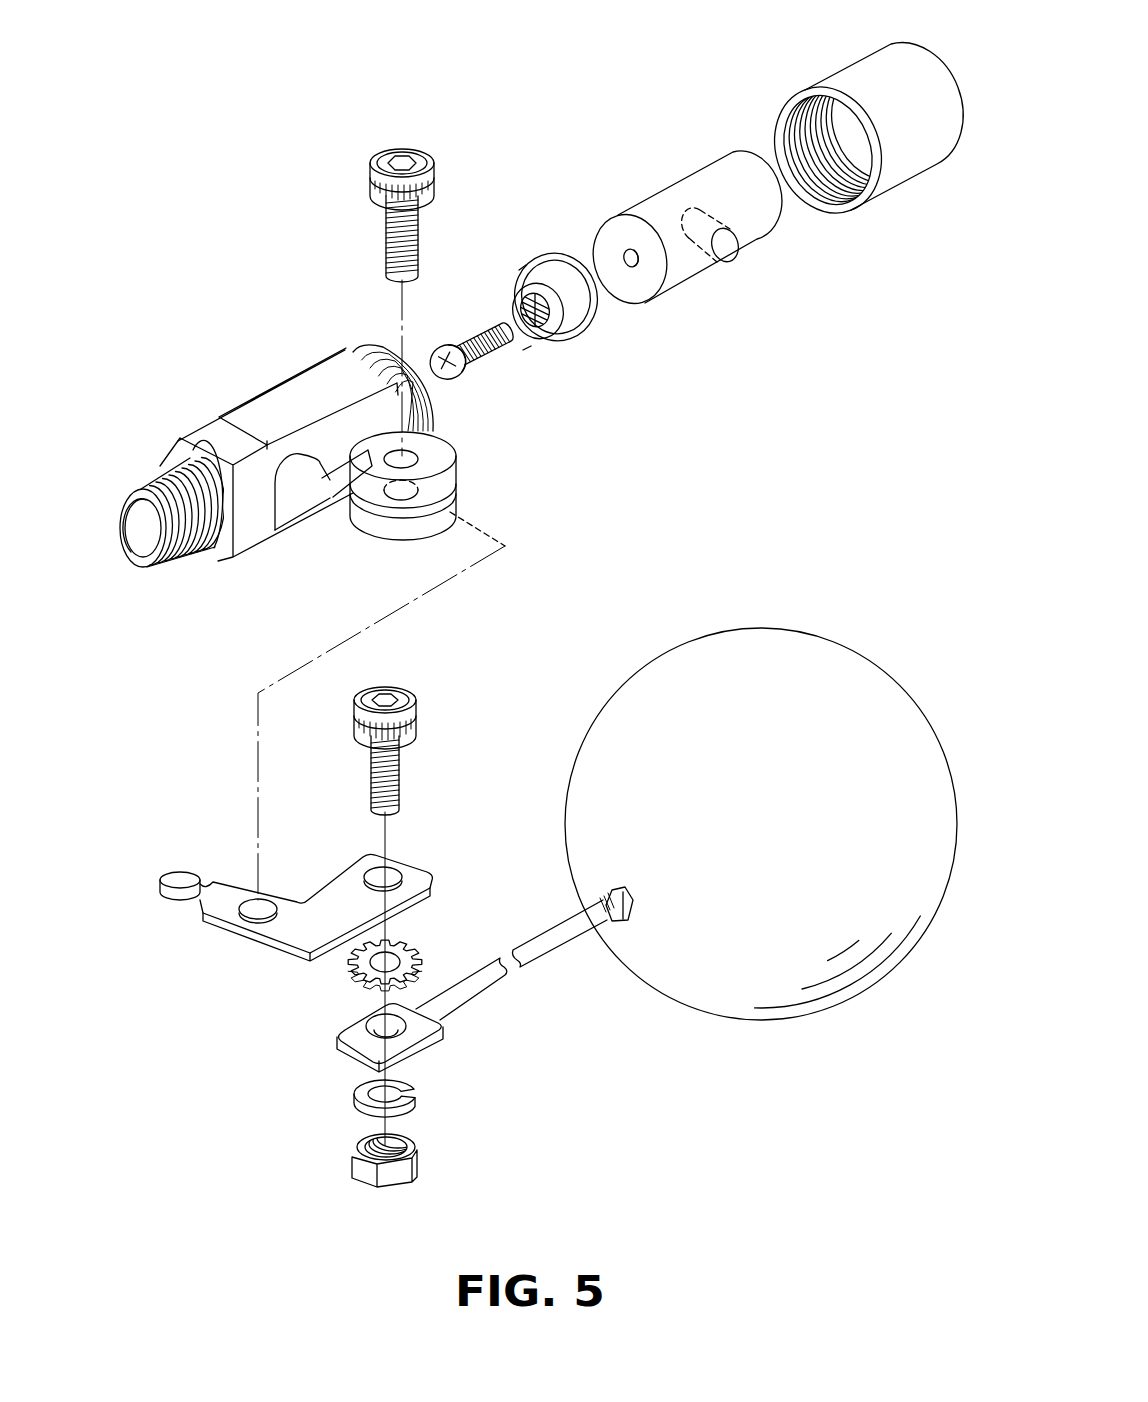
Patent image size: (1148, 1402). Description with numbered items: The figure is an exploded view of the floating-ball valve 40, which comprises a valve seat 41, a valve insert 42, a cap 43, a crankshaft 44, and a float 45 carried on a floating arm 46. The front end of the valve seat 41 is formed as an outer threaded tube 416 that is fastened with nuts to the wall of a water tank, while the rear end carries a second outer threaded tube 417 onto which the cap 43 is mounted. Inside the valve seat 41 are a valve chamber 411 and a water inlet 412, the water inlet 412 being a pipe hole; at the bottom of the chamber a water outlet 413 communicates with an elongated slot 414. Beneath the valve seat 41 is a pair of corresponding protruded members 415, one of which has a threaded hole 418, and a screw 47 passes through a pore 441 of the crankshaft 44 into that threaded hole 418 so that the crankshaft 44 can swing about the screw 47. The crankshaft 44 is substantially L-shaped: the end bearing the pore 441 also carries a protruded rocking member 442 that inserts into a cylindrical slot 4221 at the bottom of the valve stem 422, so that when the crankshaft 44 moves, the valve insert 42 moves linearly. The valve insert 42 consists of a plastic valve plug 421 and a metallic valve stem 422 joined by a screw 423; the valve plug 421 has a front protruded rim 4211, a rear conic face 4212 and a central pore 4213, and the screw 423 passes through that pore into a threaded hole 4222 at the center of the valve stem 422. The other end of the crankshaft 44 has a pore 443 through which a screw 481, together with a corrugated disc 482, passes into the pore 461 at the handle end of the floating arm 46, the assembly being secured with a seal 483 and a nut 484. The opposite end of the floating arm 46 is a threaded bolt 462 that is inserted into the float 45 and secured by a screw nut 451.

The floating-ball valve 40 is at (274, 185).
The valve seat 41 is at (311, 458).
The valve chamber 411 is at (283, 490).
The water inlet 412 is at (152, 548).
The water outlet 413 is at (305, 503).
The elongated slot 414 is at (357, 508).
The protruded members 415 is at (437, 453).
The outer threaded tube 416 is at (152, 490).
The outer threaded tube 417 is at (386, 345).
The threaded hole 418 is at (418, 488).
The valve insert 42 is at (708, 98).
The valve plug 421 is at (556, 301).
The front protruded rim 4211 is at (557, 325).
The rear conic face 4212 is at (582, 323).
The pore 4213 is at (528, 310).
The valve stem 422 is at (672, 223).
The cylindrical slot 4221 is at (724, 260).
The threaded hole 4222 is at (626, 256).
The screw 423 is at (437, 363).
The cap 43 is at (842, 80).
The crankshaft 44 is at (288, 891).
The pore 441 is at (243, 906).
The protruded rocking member 442 is at (185, 877).
The pore 443 is at (390, 874).
The float 45 is at (729, 858).
The screw nut 451 is at (603, 895).
The floating arm 46 is at (436, 982).
The pore 461 is at (364, 1020).
The threaded bolt 462 is at (609, 922).
The screw 47 is at (401, 166).
The screw 481 is at (418, 700).
The corrugated disc 482 is at (405, 946).
The seal 483 is at (357, 1088).
The nut 484 is at (355, 1147).